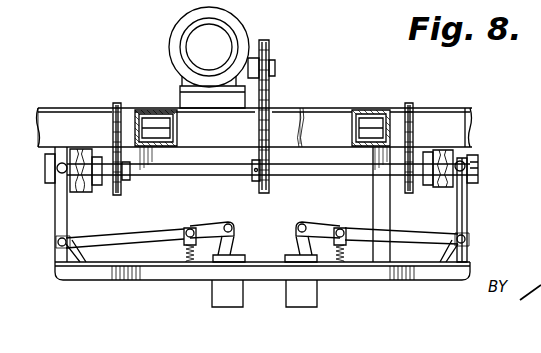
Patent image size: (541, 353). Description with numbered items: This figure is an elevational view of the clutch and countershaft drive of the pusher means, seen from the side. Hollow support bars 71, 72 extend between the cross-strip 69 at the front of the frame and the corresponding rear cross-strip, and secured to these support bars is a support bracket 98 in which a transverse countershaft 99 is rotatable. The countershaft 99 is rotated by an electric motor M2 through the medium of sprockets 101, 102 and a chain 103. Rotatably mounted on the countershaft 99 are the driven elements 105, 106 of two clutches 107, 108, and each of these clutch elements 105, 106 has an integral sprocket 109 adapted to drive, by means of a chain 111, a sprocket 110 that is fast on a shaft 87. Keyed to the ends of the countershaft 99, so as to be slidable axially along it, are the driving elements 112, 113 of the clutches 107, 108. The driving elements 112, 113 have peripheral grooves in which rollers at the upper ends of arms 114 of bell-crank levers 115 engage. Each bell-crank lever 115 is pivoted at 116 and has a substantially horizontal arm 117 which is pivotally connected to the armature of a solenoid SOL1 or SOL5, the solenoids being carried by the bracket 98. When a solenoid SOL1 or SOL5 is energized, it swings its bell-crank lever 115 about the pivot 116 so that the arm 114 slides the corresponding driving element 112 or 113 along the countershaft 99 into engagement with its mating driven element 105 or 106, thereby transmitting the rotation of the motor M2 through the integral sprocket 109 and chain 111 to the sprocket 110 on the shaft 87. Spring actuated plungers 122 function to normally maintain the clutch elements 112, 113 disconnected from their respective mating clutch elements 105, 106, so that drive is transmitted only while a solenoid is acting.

The cross-strip 69 is at (460, 107).
The driven clutch element 106 is at (472, 112).
The clutch 107 is at (52, 140).
The hollow support bar 72 is at (322, 128).
The electric motor M2 is at (246, 30).
The sprocket 101 is at (269, 46).
The chain 103 is at (269, 97).
The sprocket 102 is at (267, 198).
The shaft 87 is at (177, 117).
The hollow support bar 71 is at (178, 141).
The sprocket 110 is at (118, 104).
The chain 111 is at (412, 104).
The transverse countershaft 99 is at (296, 172).
The driving clutch element 112 is at (70, 168).
The driven clutch element 105 is at (82, 149).
The integral sprocket 109 is at (104, 186).
The driving clutch element 113 is at (438, 154).
The clutch 108 is at (482, 166).
The bell-crank lever arm 114 is at (467, 208).
The support bracket 98 is at (387, 278).
The solenoid SOL1 is at (226, 304).
The solenoid SOL5 is at (316, 302).
The bell-crank lever 115 is at (112, 249).
The pivot 116 is at (60, 246).
The horizontal arm 117 is at (175, 241).
The spring actuated plunger 122 is at (192, 226).